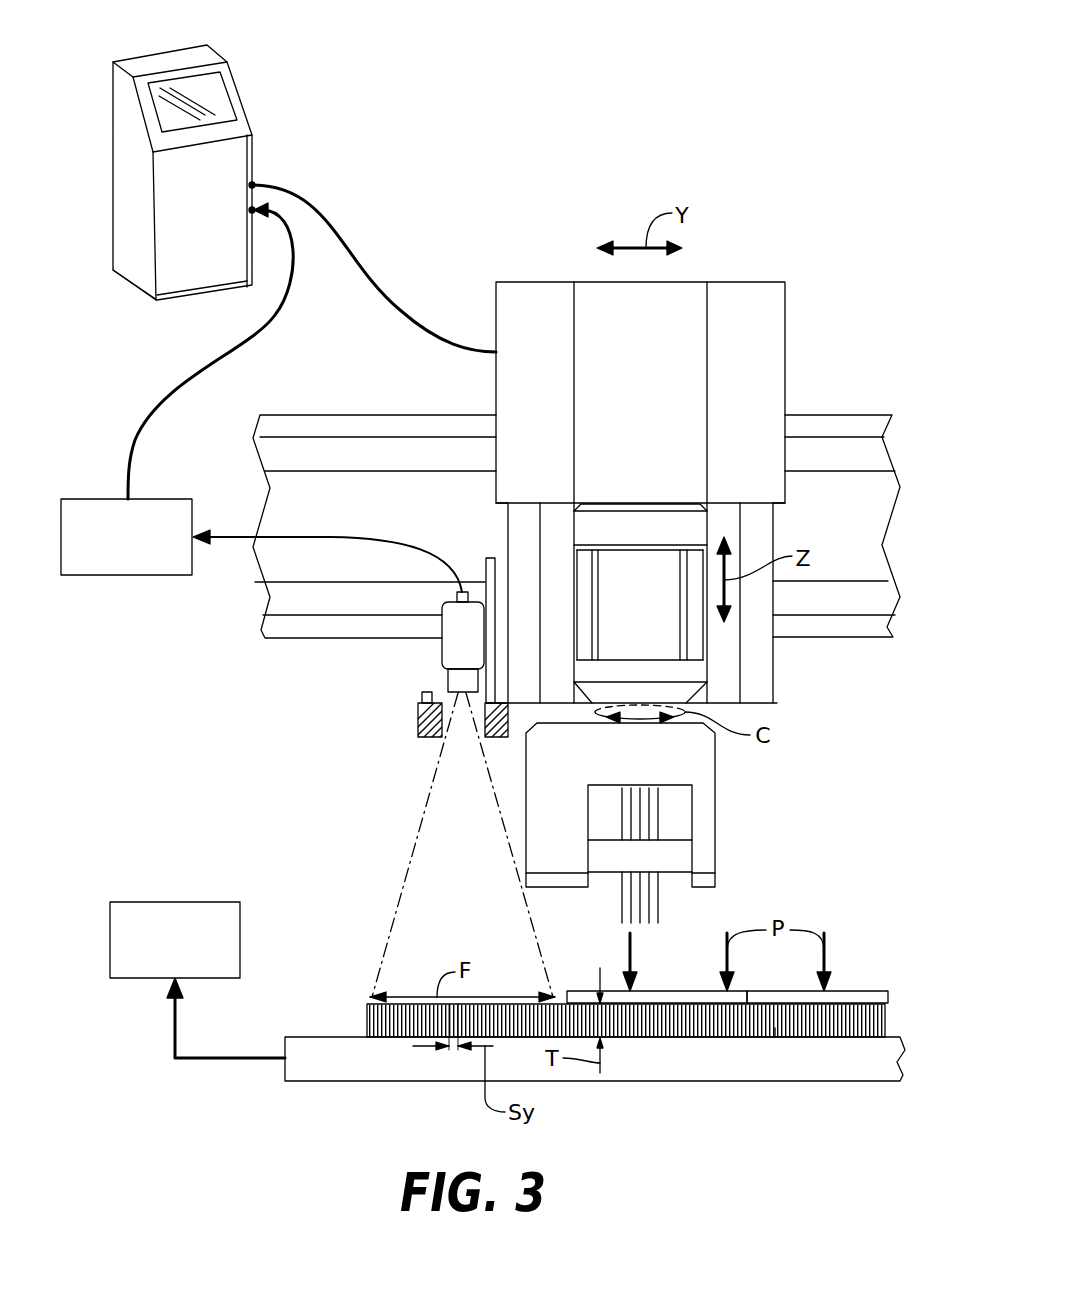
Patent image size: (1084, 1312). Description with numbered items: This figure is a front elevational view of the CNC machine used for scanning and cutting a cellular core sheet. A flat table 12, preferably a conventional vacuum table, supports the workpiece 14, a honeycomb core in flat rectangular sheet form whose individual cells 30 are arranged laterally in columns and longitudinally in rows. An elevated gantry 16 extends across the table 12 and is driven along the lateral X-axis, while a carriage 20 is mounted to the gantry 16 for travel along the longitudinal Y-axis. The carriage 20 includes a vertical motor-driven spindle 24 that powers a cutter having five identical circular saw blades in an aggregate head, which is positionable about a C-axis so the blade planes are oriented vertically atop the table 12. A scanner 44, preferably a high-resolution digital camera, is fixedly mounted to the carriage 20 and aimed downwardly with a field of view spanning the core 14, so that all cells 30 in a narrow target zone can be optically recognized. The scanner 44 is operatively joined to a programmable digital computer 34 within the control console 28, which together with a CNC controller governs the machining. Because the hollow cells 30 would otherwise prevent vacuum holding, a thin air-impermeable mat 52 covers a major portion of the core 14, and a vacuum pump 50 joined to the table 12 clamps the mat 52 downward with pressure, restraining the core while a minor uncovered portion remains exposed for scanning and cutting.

The table 12 is at (666, 1069).
The workpiece 14 is at (885, 1020).
The gantry 16 is at (820, 535).
The carriage 20 is at (628, 407).
The spindle 24 is at (630, 617).
The control console 28 is at (143, 58).
The honeycomb cells 30 is at (775, 1028).
The programmable digital computer 34 is at (163, 499).
The scanner 44 is at (442, 657).
The vacuum pump 50 is at (213, 902).
The mat 52 is at (665, 991).